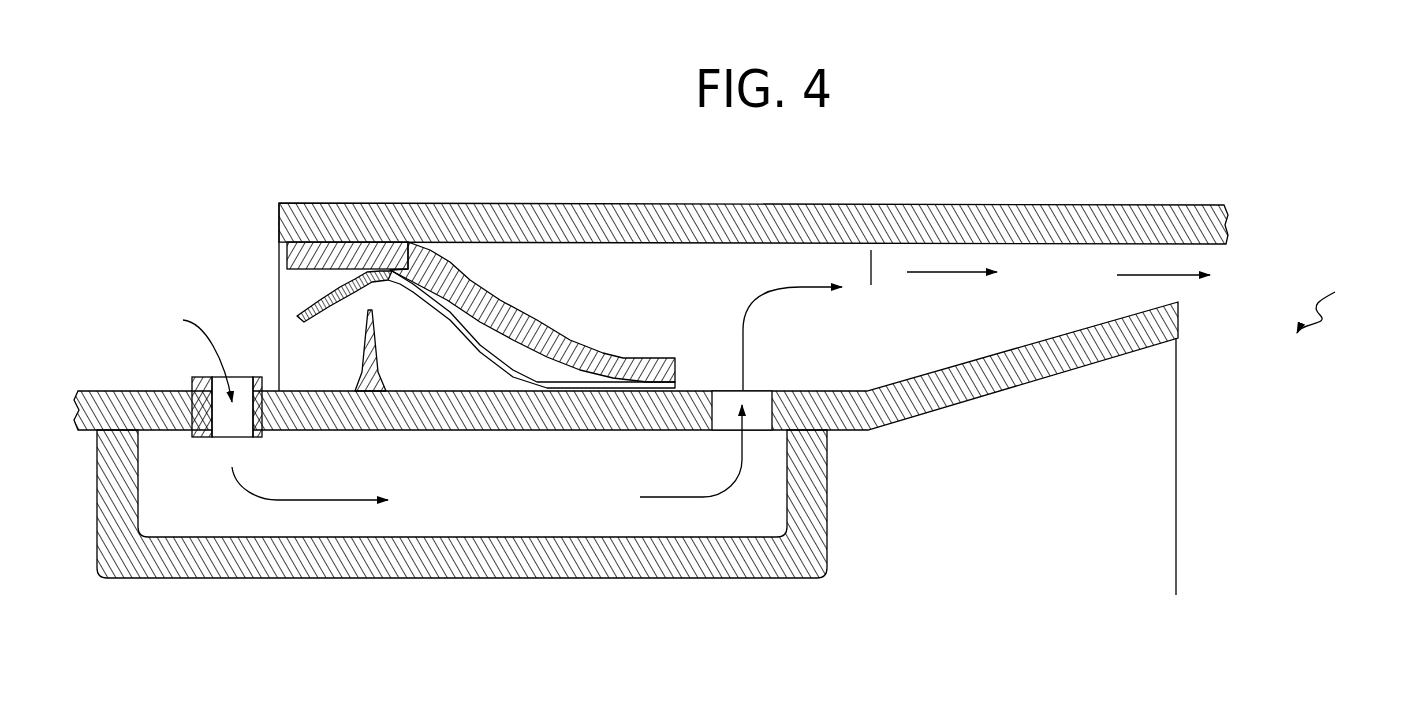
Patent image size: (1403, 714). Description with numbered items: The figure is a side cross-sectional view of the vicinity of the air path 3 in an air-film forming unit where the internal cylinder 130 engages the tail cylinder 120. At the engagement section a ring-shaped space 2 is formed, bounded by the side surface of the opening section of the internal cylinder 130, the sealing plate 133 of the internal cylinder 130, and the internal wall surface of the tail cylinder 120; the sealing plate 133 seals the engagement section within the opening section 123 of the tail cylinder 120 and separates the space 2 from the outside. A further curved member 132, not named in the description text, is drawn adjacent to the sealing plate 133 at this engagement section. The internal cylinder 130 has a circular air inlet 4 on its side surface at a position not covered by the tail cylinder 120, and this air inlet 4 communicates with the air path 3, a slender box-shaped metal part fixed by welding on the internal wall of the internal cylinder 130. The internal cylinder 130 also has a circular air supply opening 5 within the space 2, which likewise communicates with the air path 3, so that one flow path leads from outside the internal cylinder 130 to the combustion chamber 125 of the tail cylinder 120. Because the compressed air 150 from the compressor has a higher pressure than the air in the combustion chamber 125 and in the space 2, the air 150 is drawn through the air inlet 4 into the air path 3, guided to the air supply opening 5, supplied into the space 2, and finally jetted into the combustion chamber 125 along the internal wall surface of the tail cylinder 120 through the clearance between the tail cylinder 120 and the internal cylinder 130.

The space 2 is at (871, 250).
The air path 3 is at (490, 512).
The air inlet 4 is at (230, 422).
The air supply opening 5 is at (728, 398).
The tail cylinder 120 is at (973, 203).
The opening section of the tail cylinder 123 is at (1178, 480).
The combustion chamber 125 is at (1338, 302).
The internal cylinder 130 is at (120, 391).
The guide vane 132 is at (550, 329).
The sealing plate 133 is at (480, 357).
The air 150 is at (183, 320).